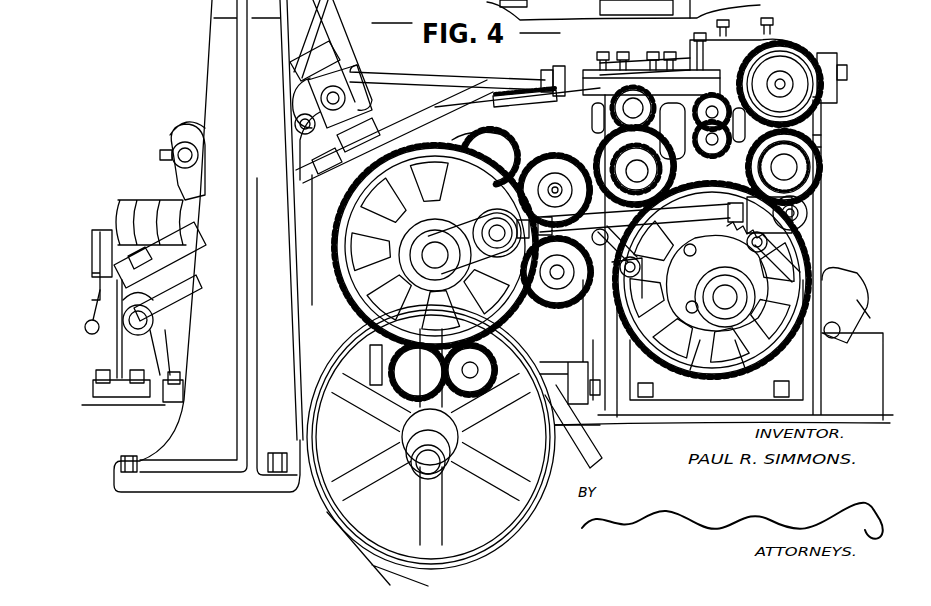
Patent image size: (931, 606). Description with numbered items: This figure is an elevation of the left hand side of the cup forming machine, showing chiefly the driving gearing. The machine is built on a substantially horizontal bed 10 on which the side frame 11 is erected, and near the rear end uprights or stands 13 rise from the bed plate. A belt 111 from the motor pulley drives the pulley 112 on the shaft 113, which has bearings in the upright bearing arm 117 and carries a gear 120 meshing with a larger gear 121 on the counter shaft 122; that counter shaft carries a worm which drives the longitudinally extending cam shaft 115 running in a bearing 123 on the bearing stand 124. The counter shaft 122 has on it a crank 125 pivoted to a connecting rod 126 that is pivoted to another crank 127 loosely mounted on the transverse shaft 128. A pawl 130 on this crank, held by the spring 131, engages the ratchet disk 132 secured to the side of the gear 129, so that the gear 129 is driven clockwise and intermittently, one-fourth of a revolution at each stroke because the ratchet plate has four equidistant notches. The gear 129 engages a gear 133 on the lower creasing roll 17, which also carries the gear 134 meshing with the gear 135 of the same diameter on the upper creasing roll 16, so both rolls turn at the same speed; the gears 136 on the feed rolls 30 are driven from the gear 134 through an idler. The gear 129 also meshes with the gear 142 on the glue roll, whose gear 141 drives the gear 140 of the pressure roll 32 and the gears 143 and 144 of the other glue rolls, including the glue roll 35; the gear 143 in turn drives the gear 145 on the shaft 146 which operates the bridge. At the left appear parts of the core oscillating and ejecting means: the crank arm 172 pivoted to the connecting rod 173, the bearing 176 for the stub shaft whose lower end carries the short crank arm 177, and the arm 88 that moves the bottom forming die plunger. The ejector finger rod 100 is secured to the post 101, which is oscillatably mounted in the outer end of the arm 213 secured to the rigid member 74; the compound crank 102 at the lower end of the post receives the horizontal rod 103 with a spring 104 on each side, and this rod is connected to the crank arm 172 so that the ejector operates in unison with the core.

The bed 10 is at (647, 441).
The side frame 11 is at (808, 229).
The uprights or stands 13 is at (220, 87).
The upper creasing roll 16 is at (712, 110).
The lower creasing roll 17 is at (793, 168).
The feed rolls 30 is at (738, 82).
The pressure roll 32 is at (633, 108).
The glue roll 35 is at (545, 162).
The rigid member 74 is at (297, 88).
The arm 88 is at (190, 192).
The finger rod 100 is at (447, 81).
The post 101 is at (547, 72).
The compound crank 102 is at (559, 66).
The horizontal rod 103 is at (435, 107).
The spring 104 is at (508, 98).
The belt 111 is at (585, 459).
The pulley 112 is at (508, 523).
The shaft 113 is at (418, 469).
The cam shaft 115 is at (86, 230).
The bearing arm 117 is at (432, 370).
The gear 120 is at (464, 390).
The larger gear 121 is at (346, 300).
The counter shaft 122 is at (435, 255).
The bearing 123 is at (105, 290).
The bearing stand 124 is at (119, 340).
The crank 125 is at (478, 241).
The connecting rod 126 is at (640, 250).
The crank 127 is at (820, 246).
The shaft 128 is at (717, 283).
The gear 129 is at (723, 370).
The pawl 130 is at (765, 265).
The spring 131 is at (772, 280).
The ratchet disk 132 is at (675, 268).
The gear 133 is at (815, 148).
The gear 134 is at (815, 137).
The gear 135 is at (815, 100).
The gears 136 is at (697, 110).
The gear 140 is at (657, 97).
The gear 141 is at (597, 152).
The gear 142 is at (636, 169).
The gear 143 is at (555, 190).
The gear 144 is at (557, 272).
The gear 145 is at (490, 134).
The shaft 146 is at (460, 140).
The crank arm 172 is at (377, 144).
The connecting rod 173 is at (327, 226).
The bearing 176 is at (160, 257).
The short crank arm 177 is at (162, 305).
The arm 213 is at (299, 154).